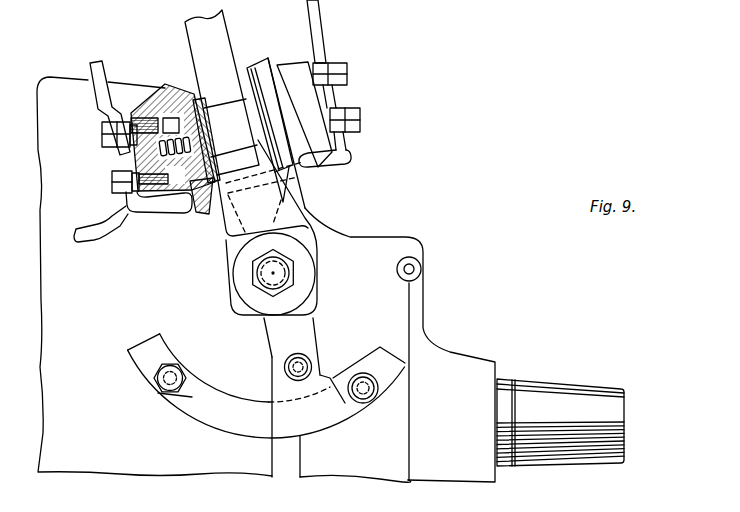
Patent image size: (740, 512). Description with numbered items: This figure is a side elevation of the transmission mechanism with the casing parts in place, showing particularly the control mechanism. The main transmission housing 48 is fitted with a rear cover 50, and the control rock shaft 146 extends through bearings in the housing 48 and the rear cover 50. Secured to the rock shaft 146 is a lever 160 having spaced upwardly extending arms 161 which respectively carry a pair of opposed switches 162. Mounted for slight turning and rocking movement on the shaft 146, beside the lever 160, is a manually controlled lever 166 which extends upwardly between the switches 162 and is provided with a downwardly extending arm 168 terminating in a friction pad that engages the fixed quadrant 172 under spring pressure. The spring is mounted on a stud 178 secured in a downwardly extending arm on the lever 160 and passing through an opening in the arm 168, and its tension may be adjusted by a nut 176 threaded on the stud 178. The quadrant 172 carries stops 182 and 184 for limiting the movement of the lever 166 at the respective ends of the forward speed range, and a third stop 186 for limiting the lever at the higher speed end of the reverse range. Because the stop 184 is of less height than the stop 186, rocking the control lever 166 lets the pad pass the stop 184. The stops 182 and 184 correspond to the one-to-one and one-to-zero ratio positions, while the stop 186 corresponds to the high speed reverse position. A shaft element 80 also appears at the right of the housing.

The main transmission housing 48 is at (150, 466).
The rear cover 50 is at (343, 473).
The shaft 80 is at (561, 380).
The control rock shaft 146 is at (280, 273).
The lever 160 is at (302, 195).
The upwardly extending arms 161 is at (169, 82).
The switches 162 is at (143, 152).
The manually controlled lever 166 is at (216, 22).
The downwardly extending arm 168 is at (311, 325).
The fixed quadrant 172 is at (236, 433).
The nut 176 is at (314, 358).
The stud 178 is at (294, 367).
The stop 182 is at (358, 408).
The stop 184 is at (192, 405).
The stop 186 is at (171, 395).